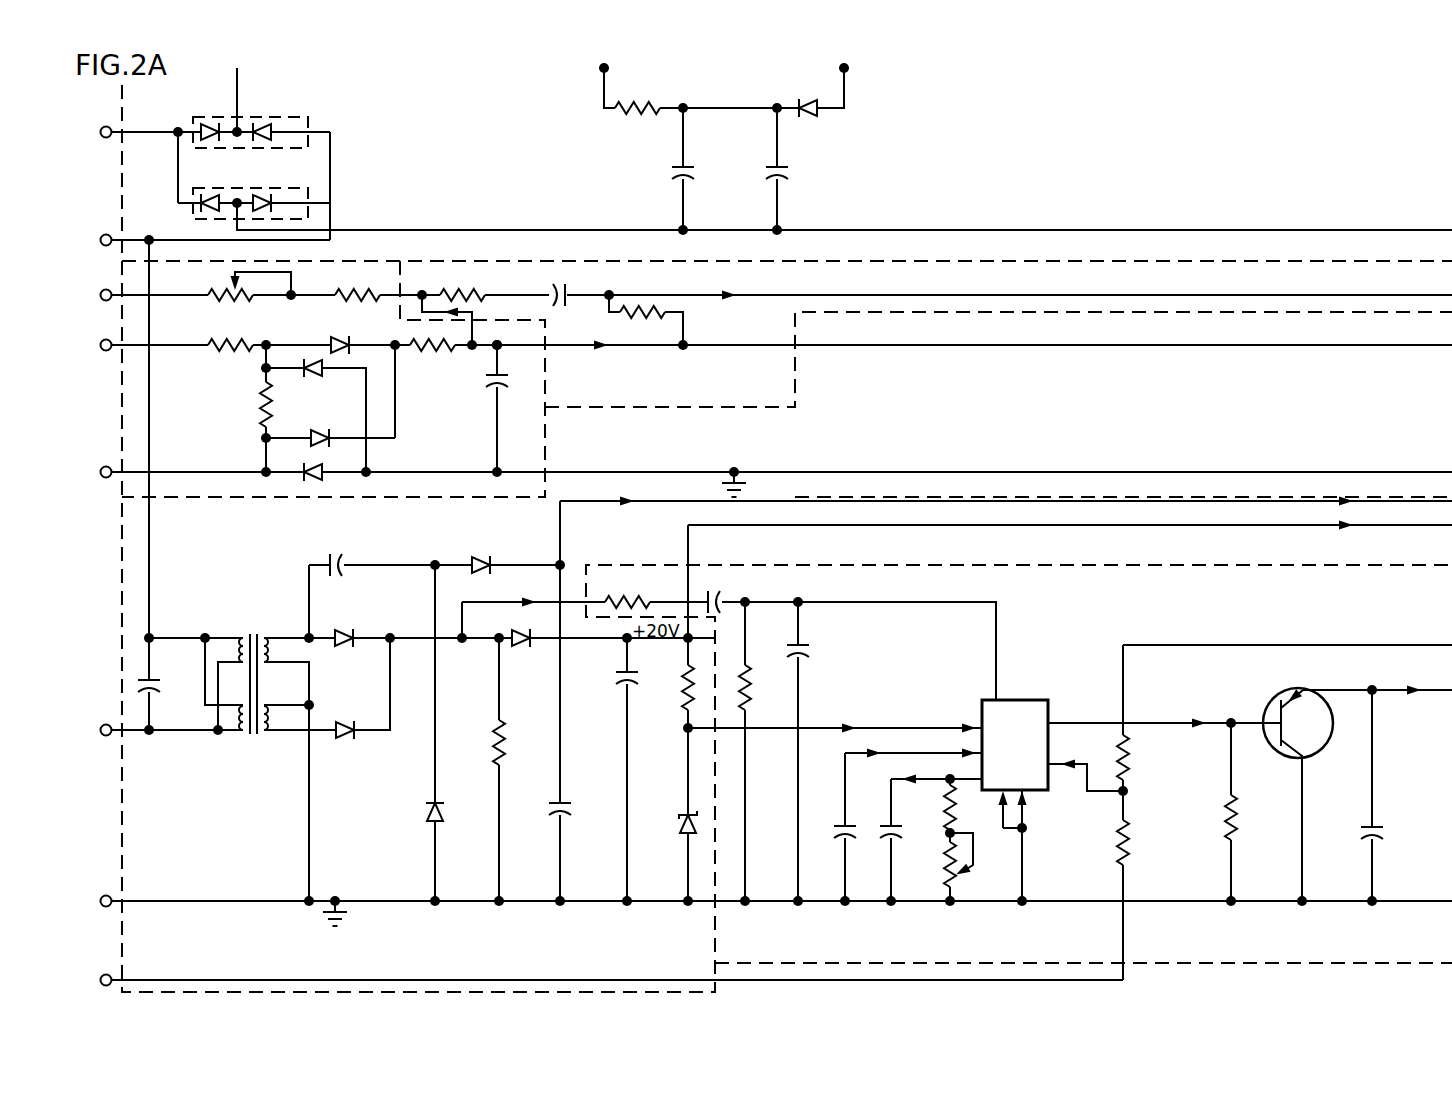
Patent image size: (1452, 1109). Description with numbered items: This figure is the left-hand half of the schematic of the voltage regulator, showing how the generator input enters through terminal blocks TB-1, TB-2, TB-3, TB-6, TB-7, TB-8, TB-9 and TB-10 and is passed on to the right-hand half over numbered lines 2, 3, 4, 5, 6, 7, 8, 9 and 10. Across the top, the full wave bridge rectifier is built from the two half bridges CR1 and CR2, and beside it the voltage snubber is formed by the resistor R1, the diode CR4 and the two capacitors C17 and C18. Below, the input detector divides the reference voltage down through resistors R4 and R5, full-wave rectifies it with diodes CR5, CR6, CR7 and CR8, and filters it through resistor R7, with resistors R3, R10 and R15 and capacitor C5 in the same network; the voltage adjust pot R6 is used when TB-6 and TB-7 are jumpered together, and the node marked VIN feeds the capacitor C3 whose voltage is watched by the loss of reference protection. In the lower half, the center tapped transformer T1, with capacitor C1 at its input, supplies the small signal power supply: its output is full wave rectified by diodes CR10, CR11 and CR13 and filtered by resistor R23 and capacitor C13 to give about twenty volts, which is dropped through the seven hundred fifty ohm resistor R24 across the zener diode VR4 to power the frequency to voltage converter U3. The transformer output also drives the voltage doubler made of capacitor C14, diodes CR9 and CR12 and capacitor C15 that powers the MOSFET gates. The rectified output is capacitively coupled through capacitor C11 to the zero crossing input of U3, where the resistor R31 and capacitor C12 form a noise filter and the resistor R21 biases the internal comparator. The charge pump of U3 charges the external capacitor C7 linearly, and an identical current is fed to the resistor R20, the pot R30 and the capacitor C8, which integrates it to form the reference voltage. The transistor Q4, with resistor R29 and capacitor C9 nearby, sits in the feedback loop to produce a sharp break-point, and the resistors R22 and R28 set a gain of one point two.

The input terminal TB-1 is at (87, 119).
The input terminal TB-2 is at (87, 719).
The input terminal TB-3 is at (87, 228).
The input terminal TB-6 is at (87, 283).
The input terminal TB-7 is at (87, 889).
The terminal TB-8 is at (87, 968).
The input terminal TB-9 is at (87, 460).
The input terminal TB-10 is at (89, 333).
The interconnection line 2 is at (844, 216).
The interconnection line 3 is at (1009, 287).
The interconnection line 4 is at (953, 335).
The interconnection line 5 is at (887, 463).
The interconnection line 6 is at (1006, 513).
The interconnection line 7 is at (1070, 538).
The interconnection line 8 is at (1287, 636).
The interconnection line 9 is at (1377, 681).
The interconnection line 10 is at (782, 891).
The half bridge rectifier CR1 is at (254, 119).
The half bridge rectifier CR2 is at (254, 189).
The snubber diode CR4 is at (763, 92).
The rectifier diode CR5 is at (238, 482).
The rectifier diode CR6 is at (316, 381).
The rectifier diode CR7 is at (316, 428).
The rectifier diode CR8 is at (364, 333).
The voltage doubler diode CR9 is at (457, 733).
The rectifier diode CR10 is at (347, 625).
The rectifier diode CR11 is at (347, 718).
The voltage doubler diode CR12 is at (480, 554).
The diode CR13 is at (517, 627).
The snubber resistor R1 is at (643, 91).
The resistor R3 is at (387, 284).
The voltage divider resistor R4 is at (248, 404).
The voltage divider resistor R5 is at (221, 359).
The voltage adjust pot R6 is at (223, 309).
The filter resistor R7 is at (432, 359).
The resistor R10 is at (642, 326).
The resistor R15 is at (494, 285).
The integrating resistor R20 is at (927, 810).
The bias resistor R21 is at (766, 751).
The gain resistor R22 is at (1144, 842).
The filter resistor R23 is at (520, 770).
The supply resistor R24 is at (667, 684).
The gain resistor R28 is at (1144, 757).
The resistor R29 is at (1253, 812).
The pot R30 is at (969, 871).
The noise filter resistor R31 is at (627, 592).
The capacitor C1 is at (164, 684).
The reference capacitor C3 is at (510, 408).
The capacitor C5 is at (560, 285).
The charge pump capacitor C7 is at (830, 827).
The integrating capacitor C8 is at (905, 840).
The capacitor C9 is at (1388, 795).
The coupling capacitor C11 is at (718, 592).
The noise filter capacitor C12 is at (819, 751).
The filter capacitor C13 is at (605, 770).
The voltage doubler capacitor C14 is at (333, 554).
The voltage doubler capacitor C15 is at (582, 733).
The snubber capacitor C17 is at (658, 169).
The snubber capacitor C18 is at (759, 169).
The zener diode VR4 is at (664, 814).
The center tapped transformer T1 is at (251, 669).
The frequency to voltage converter U3 is at (1002, 735).
The transistor Q4 is at (1298, 794).
The input voltage node VIN is at (514, 337).